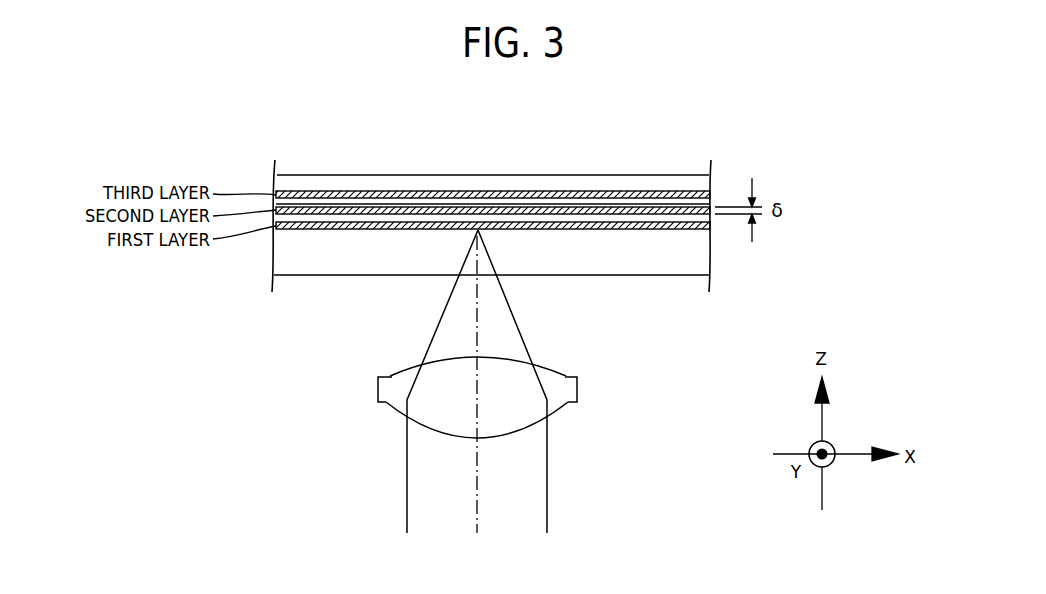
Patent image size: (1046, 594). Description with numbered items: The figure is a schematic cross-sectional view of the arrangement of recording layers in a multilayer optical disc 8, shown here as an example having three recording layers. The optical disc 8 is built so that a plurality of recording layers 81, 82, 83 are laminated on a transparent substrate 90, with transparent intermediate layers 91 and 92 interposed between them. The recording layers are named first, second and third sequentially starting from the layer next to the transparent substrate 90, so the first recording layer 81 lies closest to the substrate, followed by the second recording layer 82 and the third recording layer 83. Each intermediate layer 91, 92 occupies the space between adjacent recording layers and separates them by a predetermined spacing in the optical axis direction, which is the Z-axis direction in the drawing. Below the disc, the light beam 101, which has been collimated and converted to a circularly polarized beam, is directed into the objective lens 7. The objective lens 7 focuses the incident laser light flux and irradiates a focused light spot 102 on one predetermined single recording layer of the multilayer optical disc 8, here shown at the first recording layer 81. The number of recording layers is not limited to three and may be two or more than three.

The objective lens 7 is at (570, 388).
The multilayer optical disc 8 is at (335, 273).
The first recording layer 81 is at (389, 222).
The second recording layer 82 is at (359, 207).
The third recording layer 83 is at (328, 190).
The transparent substrate 90 is at (660, 263).
The transparent intermediate layer 91 is at (563, 217).
The transparent intermediate layer 92 is at (600, 203).
The light beam 101 is at (538, 467).
The focused light spot 102 is at (478, 228).